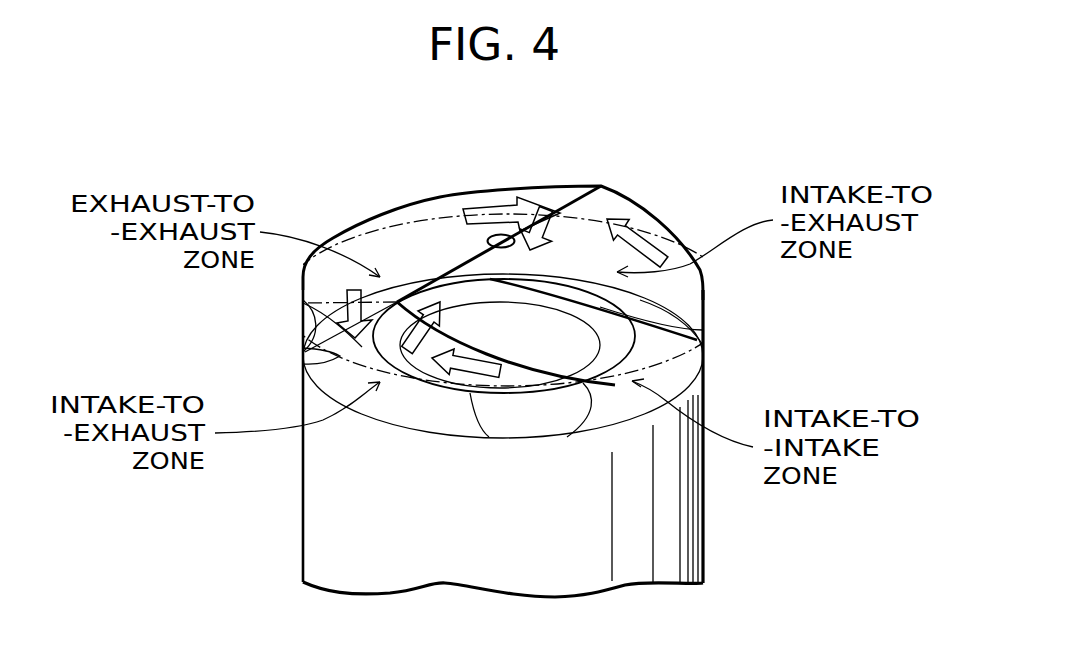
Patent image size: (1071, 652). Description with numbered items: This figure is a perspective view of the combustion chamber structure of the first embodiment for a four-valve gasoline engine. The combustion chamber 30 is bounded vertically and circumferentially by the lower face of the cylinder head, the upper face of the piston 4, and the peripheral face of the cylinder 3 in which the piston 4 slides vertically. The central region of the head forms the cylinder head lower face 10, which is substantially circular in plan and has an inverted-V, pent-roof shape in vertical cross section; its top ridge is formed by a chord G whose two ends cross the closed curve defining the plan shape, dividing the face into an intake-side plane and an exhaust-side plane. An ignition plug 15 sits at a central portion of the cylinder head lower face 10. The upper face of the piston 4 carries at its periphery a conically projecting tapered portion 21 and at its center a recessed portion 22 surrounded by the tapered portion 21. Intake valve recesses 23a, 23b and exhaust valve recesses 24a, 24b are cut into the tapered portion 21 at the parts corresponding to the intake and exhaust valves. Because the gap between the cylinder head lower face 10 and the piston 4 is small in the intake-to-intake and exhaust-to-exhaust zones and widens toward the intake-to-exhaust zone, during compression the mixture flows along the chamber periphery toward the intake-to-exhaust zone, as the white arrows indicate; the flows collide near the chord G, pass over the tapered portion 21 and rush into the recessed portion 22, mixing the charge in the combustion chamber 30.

The cylinder 3 is at (303, 337).
The piston 4 is at (300, 482).
The cylinder head lower face 10 is at (372, 229).
The ignition plug 15 is at (500, 235).
The combustion chamber 30 is at (440, 230).
The chord G is at (570, 202).
The tapered portion 21 is at (703, 284).
The recessed portion 22 is at (680, 369).
The intake valve recess 23a is at (703, 332).
The intake valve recess 23b is at (523, 417).
The exhaust valve recess 24a is at (478, 303).
The exhaust valve recess 24b is at (303, 358).